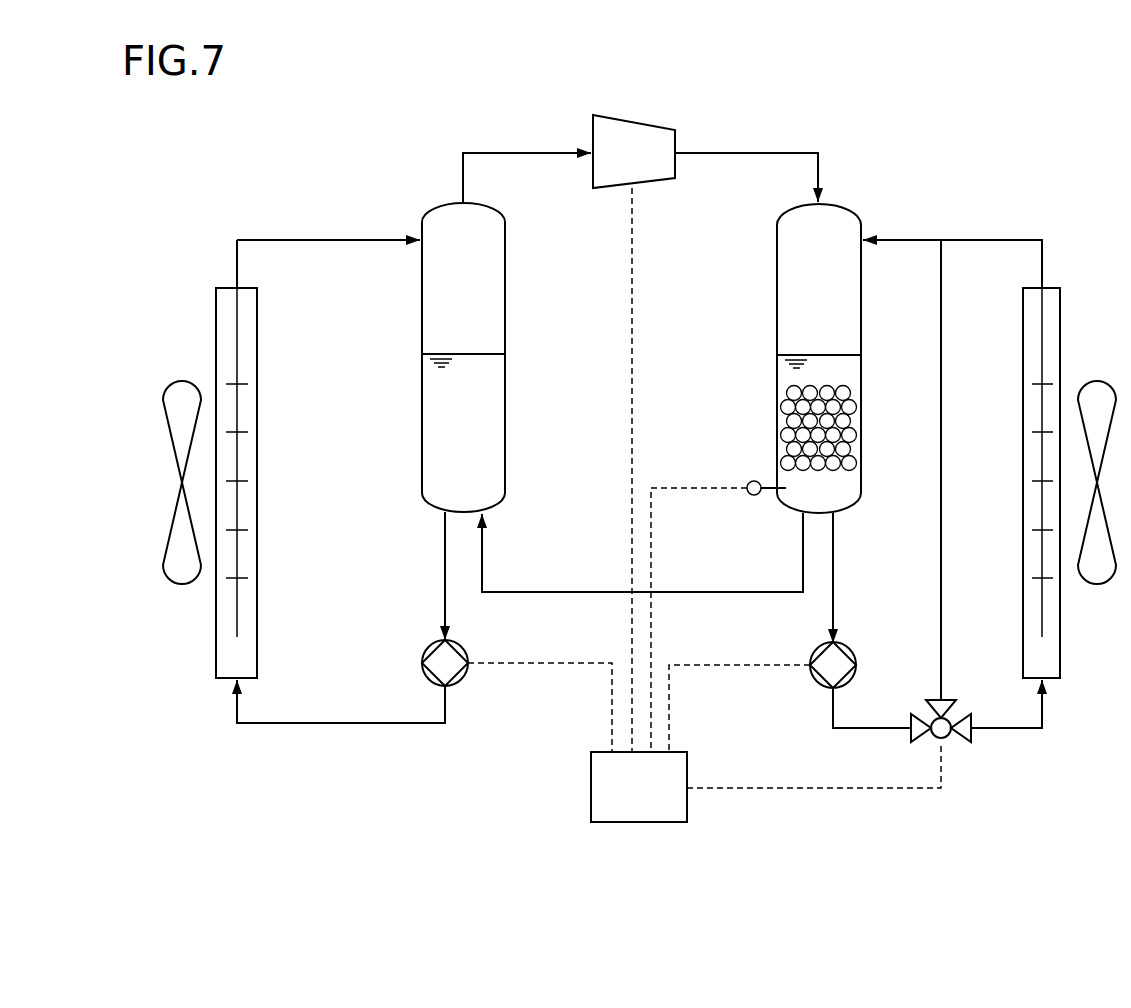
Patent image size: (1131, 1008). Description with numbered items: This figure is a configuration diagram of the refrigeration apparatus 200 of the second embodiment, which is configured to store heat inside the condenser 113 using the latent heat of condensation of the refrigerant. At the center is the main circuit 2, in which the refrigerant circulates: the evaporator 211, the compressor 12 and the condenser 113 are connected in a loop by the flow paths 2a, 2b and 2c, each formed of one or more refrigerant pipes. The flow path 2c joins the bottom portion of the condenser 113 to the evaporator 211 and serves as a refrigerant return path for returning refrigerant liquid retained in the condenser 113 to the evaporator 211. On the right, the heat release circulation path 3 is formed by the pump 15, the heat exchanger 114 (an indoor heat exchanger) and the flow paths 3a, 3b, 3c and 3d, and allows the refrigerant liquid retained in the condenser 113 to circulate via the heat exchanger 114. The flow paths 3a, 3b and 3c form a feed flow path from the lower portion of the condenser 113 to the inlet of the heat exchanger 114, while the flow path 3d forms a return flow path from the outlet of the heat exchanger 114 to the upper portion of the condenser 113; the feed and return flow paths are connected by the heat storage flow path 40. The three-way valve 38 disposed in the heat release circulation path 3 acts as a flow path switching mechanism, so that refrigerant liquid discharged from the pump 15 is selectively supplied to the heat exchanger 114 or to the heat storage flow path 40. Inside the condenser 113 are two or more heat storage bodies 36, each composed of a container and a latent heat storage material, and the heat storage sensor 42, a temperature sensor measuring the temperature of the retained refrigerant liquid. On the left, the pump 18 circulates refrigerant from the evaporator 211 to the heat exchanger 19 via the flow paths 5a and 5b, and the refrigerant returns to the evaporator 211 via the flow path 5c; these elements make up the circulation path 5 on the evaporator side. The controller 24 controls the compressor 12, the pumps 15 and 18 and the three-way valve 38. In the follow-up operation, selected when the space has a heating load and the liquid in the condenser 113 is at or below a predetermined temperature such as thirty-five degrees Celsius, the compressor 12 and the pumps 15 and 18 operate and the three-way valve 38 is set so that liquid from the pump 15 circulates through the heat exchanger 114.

The refrigeration apparatus 200 is at (950, 95).
The main circuit 2 is at (735, 150).
The flow path 2a is at (517, 150).
The flow path 2b is at (790, 152).
The flow path 2c is at (569, 591).
The compressor 12 is at (635, 115).
The first heat medium circuit 5 is at (298, 238).
The flow path 5a is at (445, 566).
The flow path 5b is at (345, 725).
The flow path 5c is at (361, 240).
The heat release circulation path 3 is at (965, 238).
The flow path 3a is at (835, 570).
The flow path 3b is at (876, 730).
The flow path 3c is at (1006, 730).
The flow path 3d is at (1022, 240).
The evaporator 211 is at (505, 311).
The condenser 113 is at (777, 281).
The heat storage body 36 is at (851, 392).
The heat storage flow path 40 is at (940, 302).
The heat storage sensor 42 is at (755, 496).
The heat exchanger 19 is at (257, 352).
The heat exchanger 114 is at (1023, 376).
The pump 18 is at (420, 663).
The pump 15 is at (856, 665).
The three-way valve 38 is at (952, 700).
The controller 24 is at (640, 822).